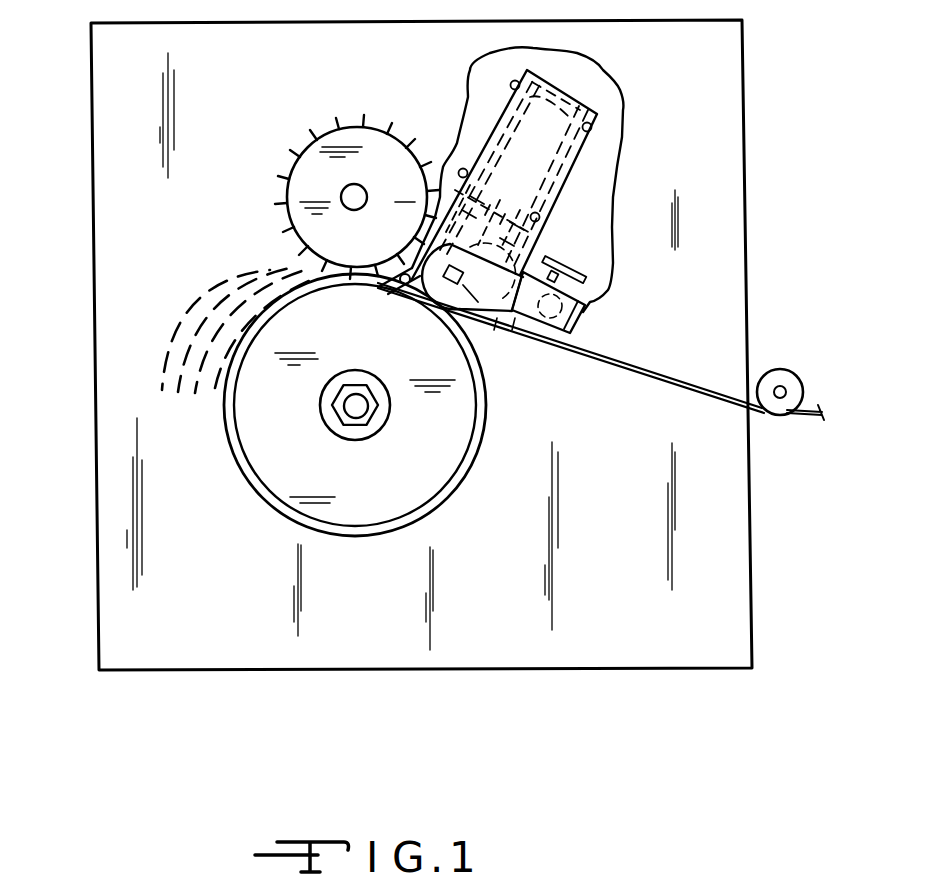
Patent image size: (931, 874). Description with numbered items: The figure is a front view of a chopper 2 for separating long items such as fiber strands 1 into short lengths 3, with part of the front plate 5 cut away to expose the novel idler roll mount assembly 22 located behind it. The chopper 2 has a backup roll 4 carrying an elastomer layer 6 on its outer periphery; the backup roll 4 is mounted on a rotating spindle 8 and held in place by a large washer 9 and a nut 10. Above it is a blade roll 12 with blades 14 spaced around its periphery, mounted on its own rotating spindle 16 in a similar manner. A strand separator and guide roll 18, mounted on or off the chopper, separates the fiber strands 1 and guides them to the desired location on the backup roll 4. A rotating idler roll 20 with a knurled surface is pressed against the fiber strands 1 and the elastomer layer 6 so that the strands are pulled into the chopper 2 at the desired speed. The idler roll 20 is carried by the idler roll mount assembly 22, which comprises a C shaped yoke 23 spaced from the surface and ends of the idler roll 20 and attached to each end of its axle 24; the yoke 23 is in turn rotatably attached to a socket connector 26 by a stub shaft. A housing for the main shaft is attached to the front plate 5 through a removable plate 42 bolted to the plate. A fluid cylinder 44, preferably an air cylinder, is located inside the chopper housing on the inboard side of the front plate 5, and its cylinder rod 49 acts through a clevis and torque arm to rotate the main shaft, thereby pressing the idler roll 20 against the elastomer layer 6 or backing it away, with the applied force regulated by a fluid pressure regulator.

The fiber strands 1 is at (808, 417).
The chopper 2 is at (86, 138).
The short lengths 3 is at (205, 320).
The backup roll 4 is at (265, 437).
The front plate 5 is at (716, 212).
The elastomer layer 6 is at (253, 480).
The rotating spindle 8 is at (358, 413).
The large washer 9 is at (383, 420).
The nut 10 is at (335, 410).
The blade roll 12 is at (323, 142).
The blades 14 is at (281, 190).
The rotating spindle 16 is at (357, 197).
The strand separator and guide roll 18 is at (778, 380).
The idler roll 20 is at (437, 290).
The idler roll mount assembly 22 is at (598, 322).
The C shaped yoke 23 is at (500, 317).
The axle 24 is at (408, 293).
The socket connector 26 is at (531, 318).
The removable plate 42 is at (591, 107).
The fluid cylinder 44 is at (550, 144).
The cylinder rod 49 is at (522, 224).